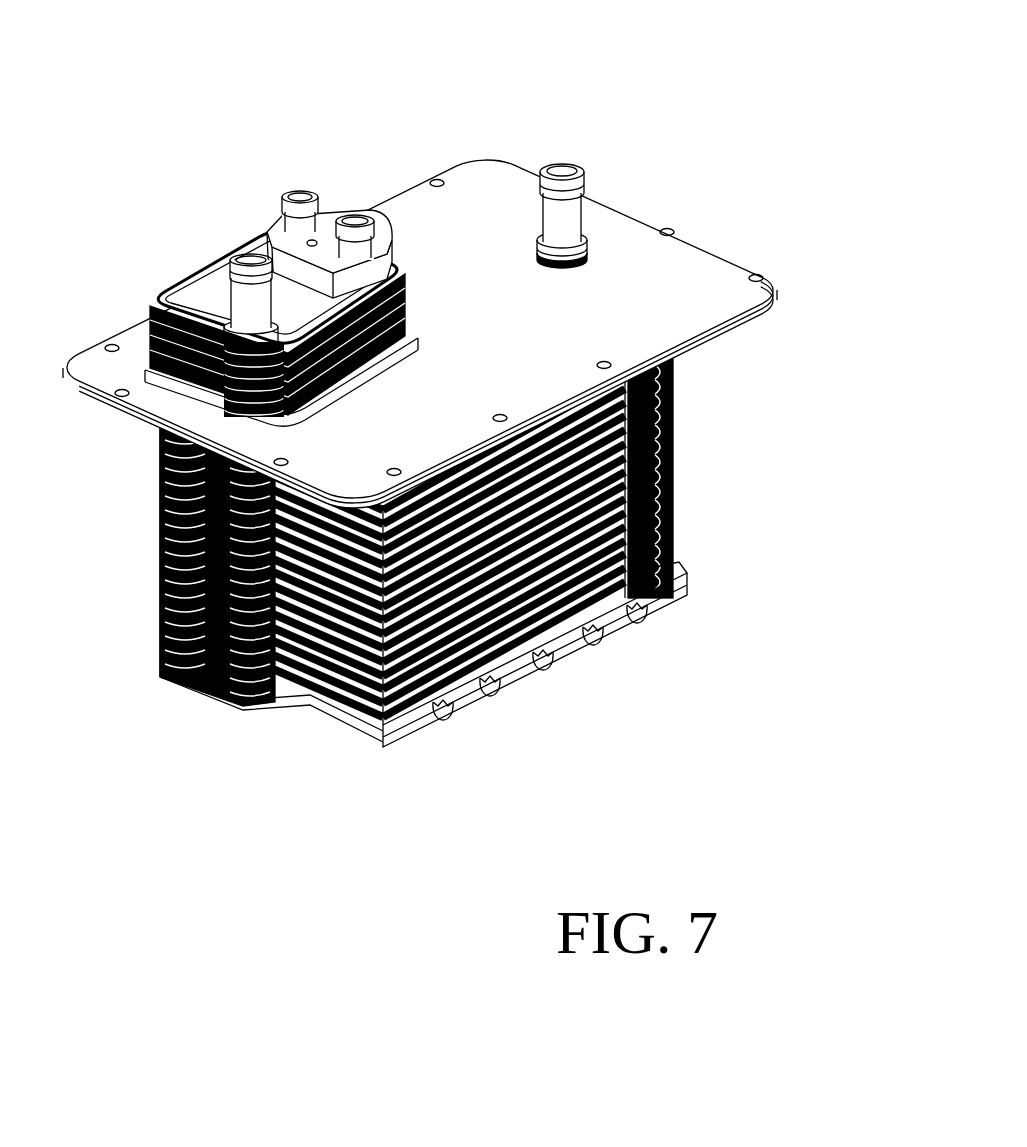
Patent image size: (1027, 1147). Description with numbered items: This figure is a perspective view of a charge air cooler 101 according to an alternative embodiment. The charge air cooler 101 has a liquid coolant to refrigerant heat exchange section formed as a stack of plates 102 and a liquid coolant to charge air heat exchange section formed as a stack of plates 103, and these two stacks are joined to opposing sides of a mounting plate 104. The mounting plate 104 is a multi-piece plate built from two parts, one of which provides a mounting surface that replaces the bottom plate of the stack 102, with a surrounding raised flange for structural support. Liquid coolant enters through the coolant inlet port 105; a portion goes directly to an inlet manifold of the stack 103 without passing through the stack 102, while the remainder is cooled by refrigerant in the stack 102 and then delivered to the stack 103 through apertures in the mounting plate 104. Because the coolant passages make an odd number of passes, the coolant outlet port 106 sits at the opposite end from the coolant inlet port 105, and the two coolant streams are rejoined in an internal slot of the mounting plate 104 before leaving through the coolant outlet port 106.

The charge air cooler 101 is at (228, 98).
The stack of plates 102 is at (137, 326).
The stack of plates 103 is at (687, 475).
The mounting plate 104 is at (732, 250).
The coolant inlet port 105 is at (250, 293).
The coolant outlet port 106 is at (572, 205).